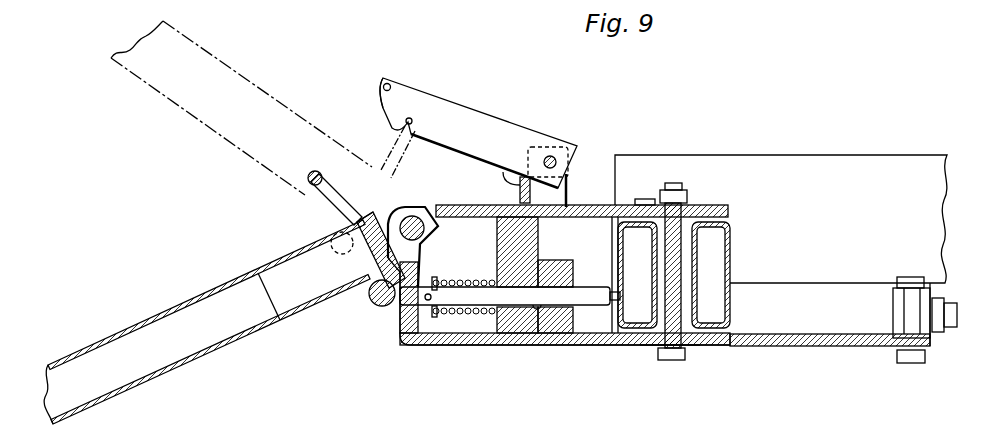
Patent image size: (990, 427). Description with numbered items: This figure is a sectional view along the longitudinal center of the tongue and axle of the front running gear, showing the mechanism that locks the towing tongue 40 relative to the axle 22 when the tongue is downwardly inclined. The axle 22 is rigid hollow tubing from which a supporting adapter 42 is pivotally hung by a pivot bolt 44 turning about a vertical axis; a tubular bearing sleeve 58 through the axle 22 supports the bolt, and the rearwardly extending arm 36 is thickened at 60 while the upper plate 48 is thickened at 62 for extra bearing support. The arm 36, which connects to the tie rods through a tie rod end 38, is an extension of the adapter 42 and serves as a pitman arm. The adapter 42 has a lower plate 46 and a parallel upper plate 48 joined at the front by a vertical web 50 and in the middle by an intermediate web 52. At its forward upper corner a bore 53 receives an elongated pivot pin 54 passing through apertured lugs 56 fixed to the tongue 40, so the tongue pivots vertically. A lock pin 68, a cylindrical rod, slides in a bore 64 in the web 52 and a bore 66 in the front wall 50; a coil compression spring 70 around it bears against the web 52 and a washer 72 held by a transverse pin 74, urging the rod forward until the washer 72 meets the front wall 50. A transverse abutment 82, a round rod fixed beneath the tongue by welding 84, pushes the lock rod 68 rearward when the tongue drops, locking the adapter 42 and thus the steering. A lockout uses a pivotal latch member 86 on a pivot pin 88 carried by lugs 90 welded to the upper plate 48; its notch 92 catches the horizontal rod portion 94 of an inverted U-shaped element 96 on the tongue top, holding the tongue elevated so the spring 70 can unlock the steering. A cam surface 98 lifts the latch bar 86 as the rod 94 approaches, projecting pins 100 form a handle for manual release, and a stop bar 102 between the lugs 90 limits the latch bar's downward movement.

The axle 22 is at (732, 243).
The rearwardly extending arm 36 is at (800, 346).
The tie rod end 38 is at (912, 312).
The towing tongue 40 is at (72, 362).
The supporting adapter 42 is at (506, 359).
The pivot bolt or pin 44 is at (680, 340).
The lower plate 46 is at (580, 342).
The upper plate 48 is at (583, 207).
The vertical web 50 is at (404, 332).
The intermediate web 52 is at (527, 237).
The bore 53 is at (427, 212).
The pivot pin or bolt 54 is at (403, 207).
The apertured lugs or ears 56 is at (372, 220).
The tubular bearing sleeve 58 is at (693, 275).
The thickened portion of arm 60 is at (653, 338).
The thickened portion of upper plate 62 is at (642, 198).
The bore 64 is at (549, 309).
The bore 66 is at (400, 312).
The lock pin 68 is at (590, 292).
The coil compression spring 70 is at (467, 314).
The washer 72 is at (436, 280).
The transverse pin 74 is at (428, 300).
The transverse abutment 82 is at (376, 297).
The welding 84 is at (367, 280).
The pivotal latch member 86 is at (470, 118).
The pivot pin 88 is at (550, 156).
The lugs 90 is at (569, 187).
The notch 92 is at (413, 121).
The horizontal rod portion 94 is at (311, 173).
The inverted U-shaped element 96 is at (322, 207).
The cam surface 98 is at (382, 107).
The projecting rods or pins 100 is at (386, 83).
The stop bar 102 is at (503, 170).